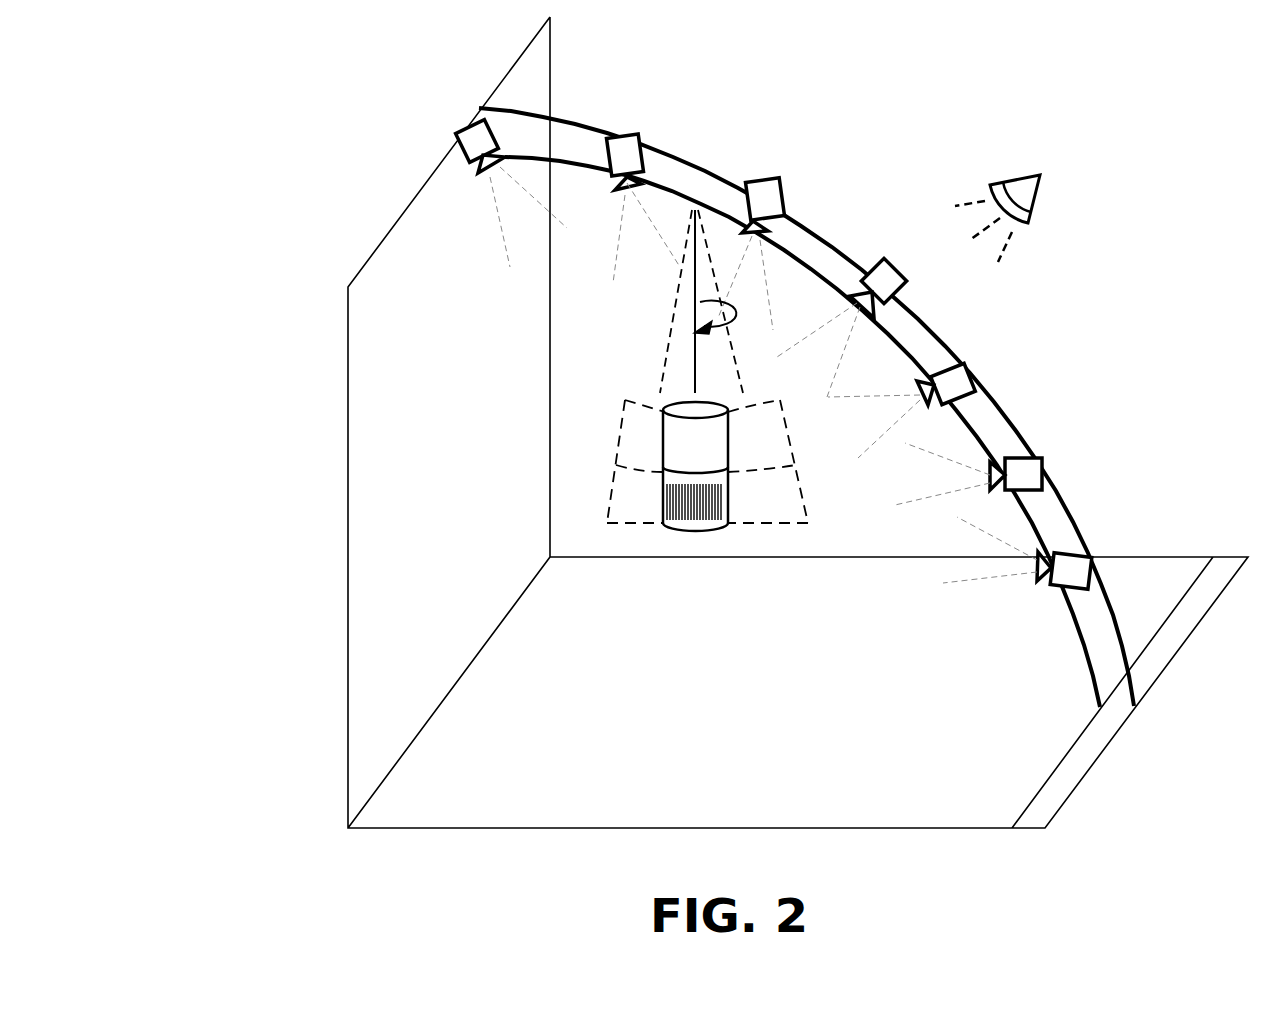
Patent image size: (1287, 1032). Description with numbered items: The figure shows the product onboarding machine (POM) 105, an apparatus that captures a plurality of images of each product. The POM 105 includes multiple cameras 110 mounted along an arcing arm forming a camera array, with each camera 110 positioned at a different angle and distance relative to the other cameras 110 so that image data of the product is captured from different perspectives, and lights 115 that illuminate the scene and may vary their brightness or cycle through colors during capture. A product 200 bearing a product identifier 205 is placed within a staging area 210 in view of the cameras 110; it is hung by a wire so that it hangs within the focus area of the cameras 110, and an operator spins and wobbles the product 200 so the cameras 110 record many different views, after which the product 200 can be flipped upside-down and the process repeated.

The product onboarding machine (POM) 105 is at (375, 158).
The cameras 110 is at (1045, 477).
The lights 115 is at (1028, 200).
The product 200 is at (682, 528).
The product identifier 205 is at (695, 502).
The staging area 210 is at (475, 451).